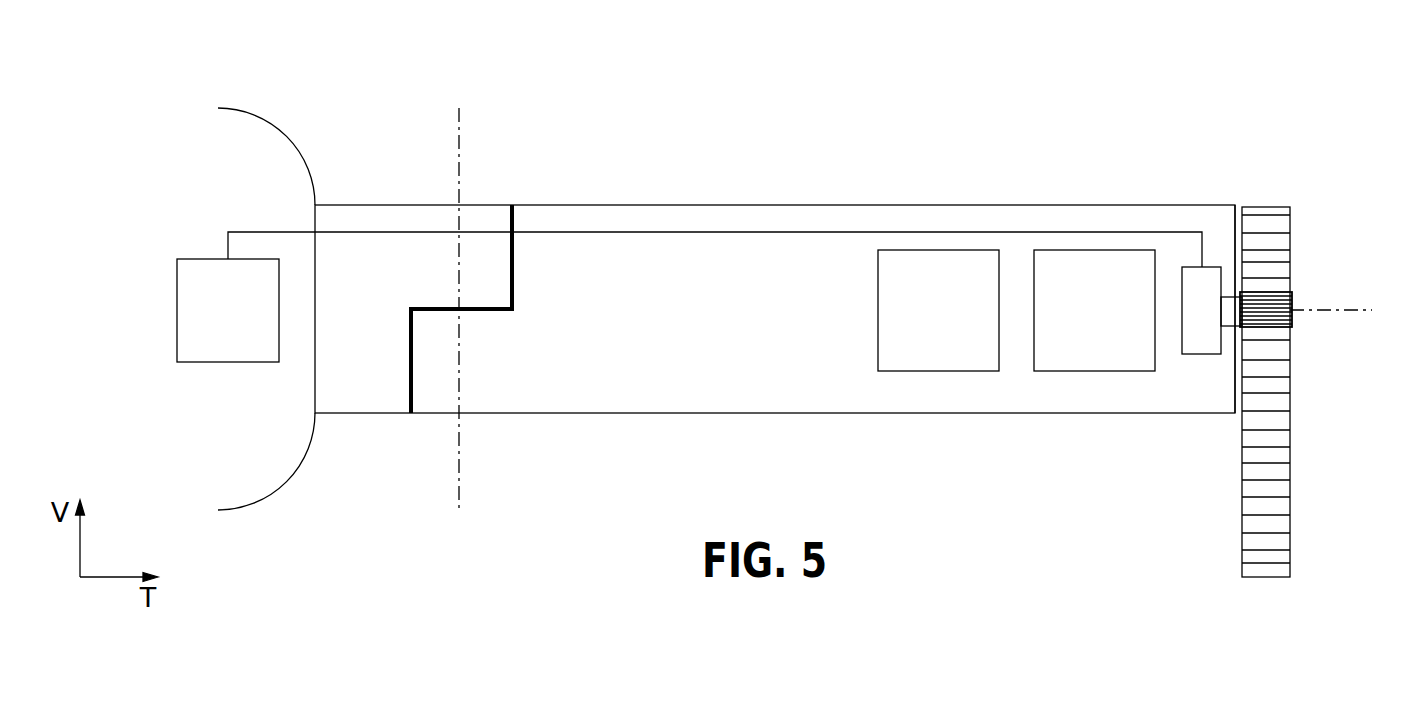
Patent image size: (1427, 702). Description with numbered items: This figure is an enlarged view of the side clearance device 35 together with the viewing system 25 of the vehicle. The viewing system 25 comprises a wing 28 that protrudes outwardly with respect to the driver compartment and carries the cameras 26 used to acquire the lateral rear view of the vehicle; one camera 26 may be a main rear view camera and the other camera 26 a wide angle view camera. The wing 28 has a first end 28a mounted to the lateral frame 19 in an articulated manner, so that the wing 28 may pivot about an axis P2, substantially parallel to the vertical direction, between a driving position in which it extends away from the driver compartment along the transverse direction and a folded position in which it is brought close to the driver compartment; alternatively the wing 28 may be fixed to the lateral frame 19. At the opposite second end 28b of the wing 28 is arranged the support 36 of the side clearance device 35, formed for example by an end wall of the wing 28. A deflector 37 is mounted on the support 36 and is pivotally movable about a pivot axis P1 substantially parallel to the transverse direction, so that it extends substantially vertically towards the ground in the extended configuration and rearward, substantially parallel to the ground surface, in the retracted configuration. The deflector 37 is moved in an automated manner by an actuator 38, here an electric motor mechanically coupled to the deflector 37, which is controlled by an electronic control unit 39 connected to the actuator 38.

The lateral frame 19 is at (275, 107).
The viewing system 25 is at (1098, 93).
The cameras 26 is at (957, 371).
The wing 28 is at (729, 189).
The first end of the wing 28a is at (515, 188).
The second end of the wing 28b is at (1225, 188).
The side clearance device 35 is at (1363, 196).
The support 36 is at (1235, 220).
The deflector 37 is at (1268, 495).
The actuator 38 is at (1198, 371).
The electronic control unit 39 is at (203, 362).
The pivot axis P1 is at (1352, 310).
The axis P2 is at (457, 135).